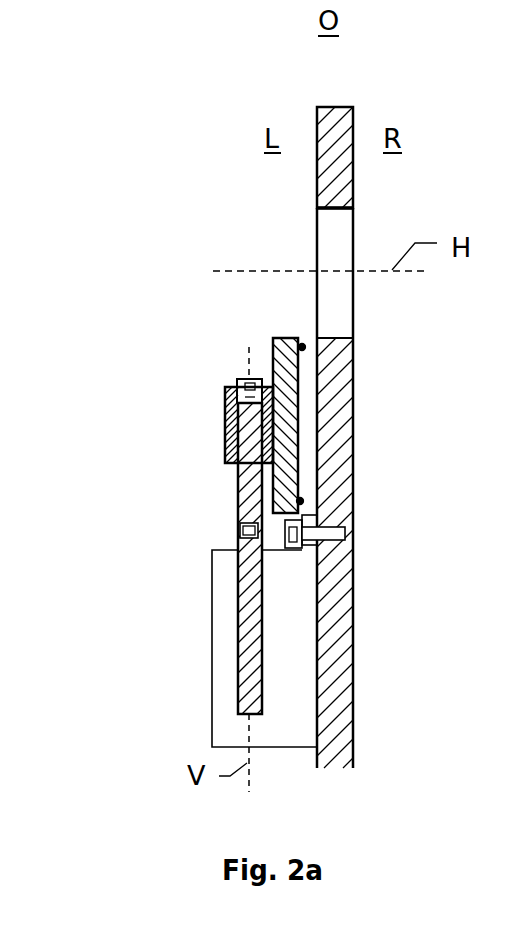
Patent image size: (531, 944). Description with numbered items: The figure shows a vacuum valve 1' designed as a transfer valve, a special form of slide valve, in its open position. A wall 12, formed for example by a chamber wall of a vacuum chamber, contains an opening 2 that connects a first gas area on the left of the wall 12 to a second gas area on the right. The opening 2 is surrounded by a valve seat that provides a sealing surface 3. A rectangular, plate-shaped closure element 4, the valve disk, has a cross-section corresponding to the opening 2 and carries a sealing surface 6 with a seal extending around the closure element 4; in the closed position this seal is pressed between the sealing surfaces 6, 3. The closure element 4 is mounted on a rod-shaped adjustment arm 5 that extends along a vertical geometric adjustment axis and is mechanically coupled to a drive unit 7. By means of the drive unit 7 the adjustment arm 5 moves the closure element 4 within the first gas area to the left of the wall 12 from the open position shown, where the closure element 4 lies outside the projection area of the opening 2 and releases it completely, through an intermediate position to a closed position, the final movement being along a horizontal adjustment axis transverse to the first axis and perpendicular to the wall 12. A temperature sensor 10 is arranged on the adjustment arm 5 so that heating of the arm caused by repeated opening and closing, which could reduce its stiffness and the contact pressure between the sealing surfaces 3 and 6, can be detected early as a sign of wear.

The vacuum valve 1' is at (249, 59).
The wall 12 is at (369, 139).
The opening 2 is at (364, 476).
The sealing surface 3 is at (305, 334).
The closure element 4 is at (250, 413).
The adjustment arm 5 is at (226, 546).
The sealing surface 6 is at (362, 424).
The drive unit 7 is at (237, 648).
The temperature sensor 10 is at (239, 520).